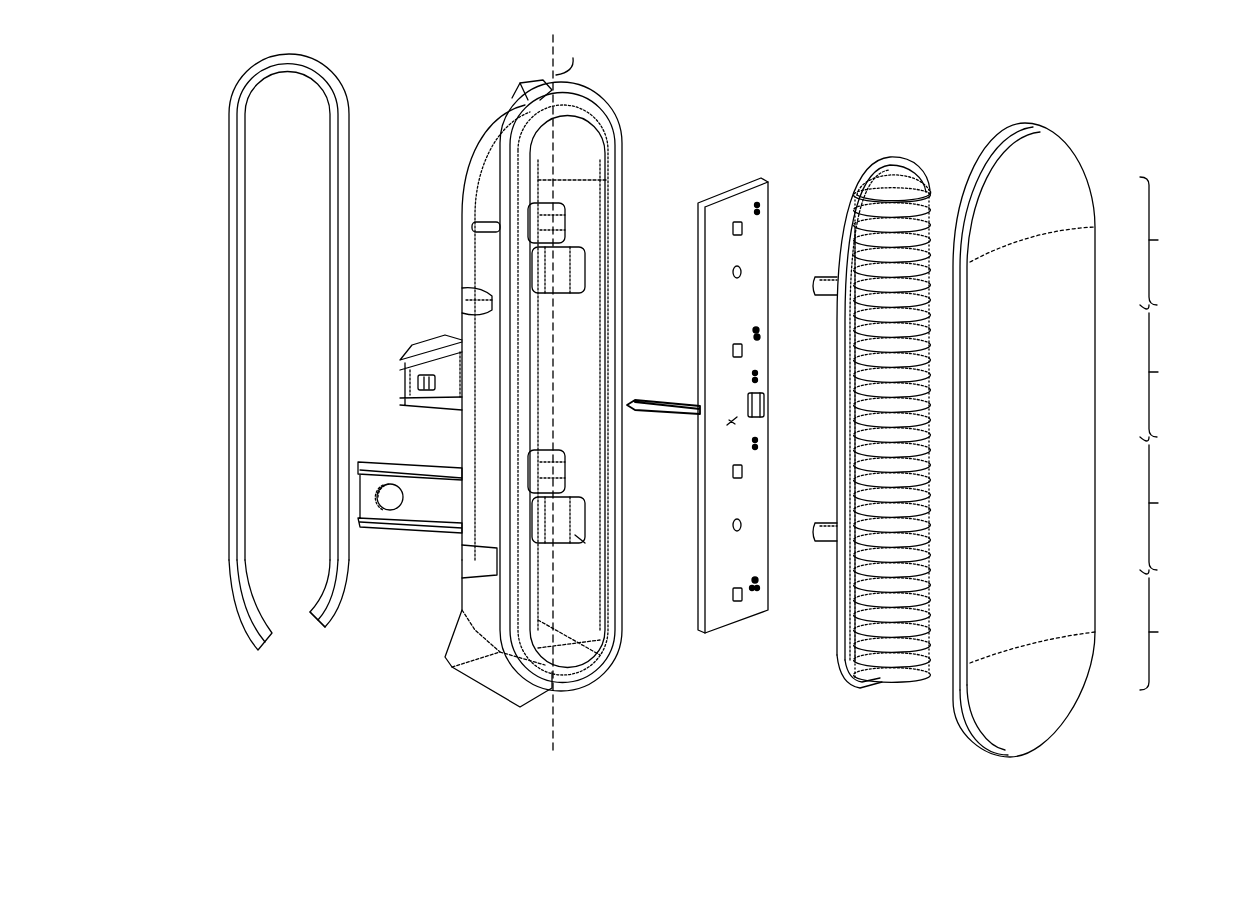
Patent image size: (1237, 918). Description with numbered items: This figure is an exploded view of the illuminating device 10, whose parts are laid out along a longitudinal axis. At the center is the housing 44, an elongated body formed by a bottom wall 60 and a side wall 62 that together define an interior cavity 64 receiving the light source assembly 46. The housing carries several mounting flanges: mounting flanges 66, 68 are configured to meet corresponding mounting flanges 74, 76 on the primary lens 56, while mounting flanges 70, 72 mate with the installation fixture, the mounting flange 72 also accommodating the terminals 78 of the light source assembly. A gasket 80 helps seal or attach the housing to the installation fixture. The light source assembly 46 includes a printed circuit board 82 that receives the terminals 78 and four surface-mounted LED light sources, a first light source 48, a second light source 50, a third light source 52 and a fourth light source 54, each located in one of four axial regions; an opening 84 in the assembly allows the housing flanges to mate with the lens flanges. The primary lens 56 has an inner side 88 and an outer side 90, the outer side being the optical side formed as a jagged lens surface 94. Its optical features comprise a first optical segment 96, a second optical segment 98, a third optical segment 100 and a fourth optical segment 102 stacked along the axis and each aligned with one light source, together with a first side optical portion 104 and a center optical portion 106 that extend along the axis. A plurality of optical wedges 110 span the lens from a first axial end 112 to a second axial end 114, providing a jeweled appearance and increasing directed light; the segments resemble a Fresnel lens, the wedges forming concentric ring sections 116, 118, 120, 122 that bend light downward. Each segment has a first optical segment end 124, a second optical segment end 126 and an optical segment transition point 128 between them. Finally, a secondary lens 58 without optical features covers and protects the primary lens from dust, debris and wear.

The illuminating device 10 is at (880, 72).
The housing 44 is at (470, 160).
The light source assembly 46 is at (700, 220).
The first light source 48 is at (735, 236).
The second light source 50 is at (735, 358).
The third light source 52 is at (735, 470).
The fourth light source 54 is at (735, 595).
The primary lens 56 is at (860, 185).
The secondary lens 58 is at (1040, 152).
The bottom wall 60 is at (585, 330).
The side wall 62 is at (470, 197).
The interior cavity 64 is at (580, 165).
The mounting flange 66 is at (573, 278).
The mounting flange 68 is at (596, 530).
The mounting flange 70 is at (367, 463).
The mounting flange 72 is at (412, 358).
The mounting flange 74 is at (818, 285).
The mounting flange 76 is at (815, 535).
The terminals 78 is at (635, 410).
The gasket 80 is at (335, 100).
The printed circuit board 82 is at (725, 195).
The opening 84 is at (745, 272).
The inner side 88 is at (745, 525).
The outer side 90 is at (930, 205).
The jagged lens surface 94 is at (938, 222).
The first optical segment 96 is at (938, 245).
The second optical segment 98 is at (850, 320).
The third optical segment 100 is at (850, 490).
The fourth optical segment 102 is at (850, 640).
The first side optical portion 104 is at (853, 675).
The center optical portion 106 is at (905, 680).
The optical wedges 110 is at (925, 655).
The first axial end 112 is at (878, 170).
The second axial end 114 is at (853, 690).
The concentric ring section 116 is at (842, 265).
The concentric ring section 118 is at (853, 380).
The concentric ring section 120 is at (855, 510).
The concentric ring section 122 is at (850, 625).
The first optical segment end 124 is at (928, 195).
The second optical segment end 126 is at (928, 310).
The optical segment transition point 128 is at (930, 268).